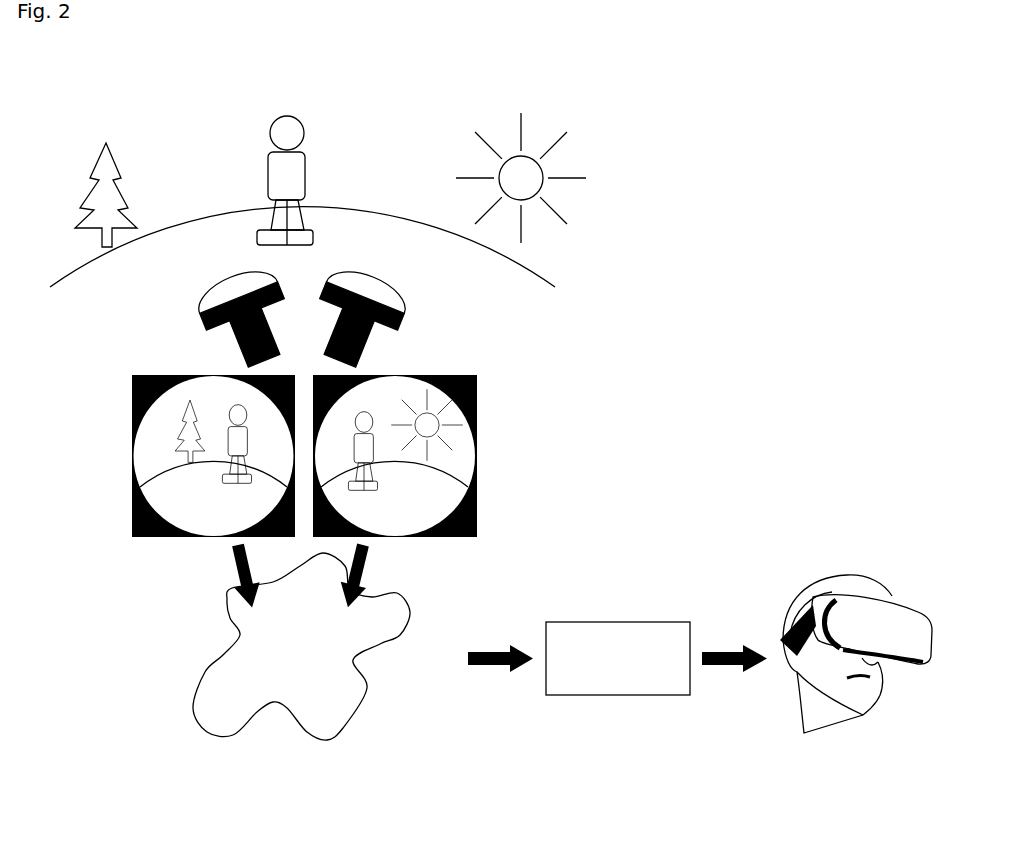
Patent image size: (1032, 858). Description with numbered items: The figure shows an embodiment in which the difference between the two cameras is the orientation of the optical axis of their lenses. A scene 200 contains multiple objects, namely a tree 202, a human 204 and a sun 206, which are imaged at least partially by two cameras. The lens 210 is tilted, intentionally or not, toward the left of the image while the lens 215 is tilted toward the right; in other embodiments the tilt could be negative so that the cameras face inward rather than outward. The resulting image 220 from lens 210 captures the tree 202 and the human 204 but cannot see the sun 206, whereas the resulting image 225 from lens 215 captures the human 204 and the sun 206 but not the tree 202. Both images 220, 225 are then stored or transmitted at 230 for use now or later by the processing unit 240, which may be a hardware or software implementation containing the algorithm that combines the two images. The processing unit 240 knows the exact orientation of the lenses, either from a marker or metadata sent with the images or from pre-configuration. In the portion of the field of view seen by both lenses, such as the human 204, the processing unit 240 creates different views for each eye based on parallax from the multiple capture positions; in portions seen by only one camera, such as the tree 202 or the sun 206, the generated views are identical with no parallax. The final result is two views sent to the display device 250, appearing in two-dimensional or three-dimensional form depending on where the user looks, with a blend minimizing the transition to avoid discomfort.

The scene 200 is at (302, 185).
The tree 202 is at (126, 195).
The human 204 is at (305, 180).
The sun 206 is at (521, 178).
The lens 210 is at (247, 319).
The lens 215 is at (357, 319).
The resulting image 220 is at (213, 456).
The resulting image 225 is at (395, 455).
The image storage or transmission 230 is at (301, 641).
The processing unit 240 is at (618, 658).
The display device 250 is at (856, 654).